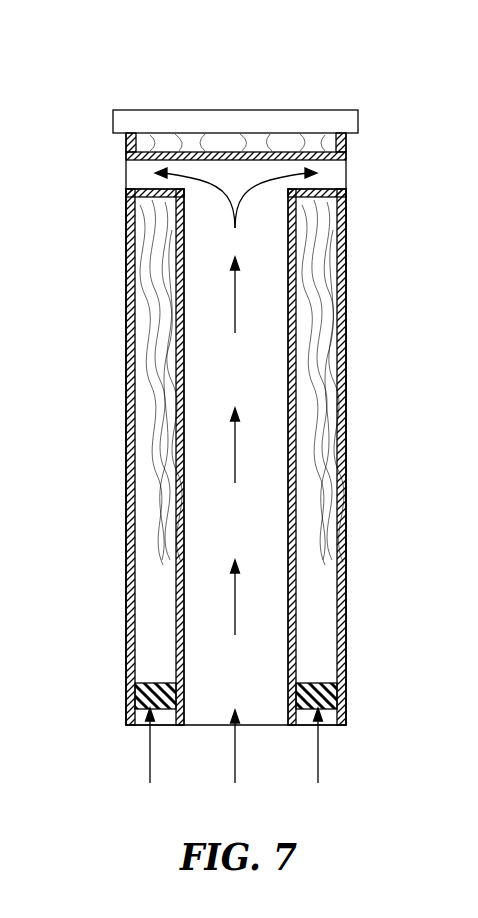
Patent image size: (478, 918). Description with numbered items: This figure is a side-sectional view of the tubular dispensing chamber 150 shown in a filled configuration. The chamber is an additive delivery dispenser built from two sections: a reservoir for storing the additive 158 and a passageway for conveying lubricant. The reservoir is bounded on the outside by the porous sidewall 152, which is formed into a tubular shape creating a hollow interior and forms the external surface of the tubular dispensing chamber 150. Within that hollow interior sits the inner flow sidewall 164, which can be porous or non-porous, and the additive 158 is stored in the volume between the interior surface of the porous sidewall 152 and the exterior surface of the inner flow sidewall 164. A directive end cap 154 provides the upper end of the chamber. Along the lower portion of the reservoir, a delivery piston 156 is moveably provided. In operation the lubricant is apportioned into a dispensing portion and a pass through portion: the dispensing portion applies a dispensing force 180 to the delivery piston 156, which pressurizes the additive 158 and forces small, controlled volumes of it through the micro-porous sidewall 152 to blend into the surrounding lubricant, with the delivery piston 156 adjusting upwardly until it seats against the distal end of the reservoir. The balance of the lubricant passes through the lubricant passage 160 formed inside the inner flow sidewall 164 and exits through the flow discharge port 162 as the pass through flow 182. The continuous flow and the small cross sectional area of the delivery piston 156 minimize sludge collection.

The tubular dispensing chamber 150 is at (223, 422).
The porous sidewall 152 is at (347, 558).
The directive end cap 154 is at (240, 110).
The delivery piston 156 is at (328, 713).
The additive 158 is at (323, 461).
The lubricant passage 160 is at (263, 371).
The flow discharge port 162 is at (142, 175).
The inner flow sidewall 164 is at (292, 524).
The dispensing force 180 is at (150, 753).
The pass through flow 182 is at (235, 772).